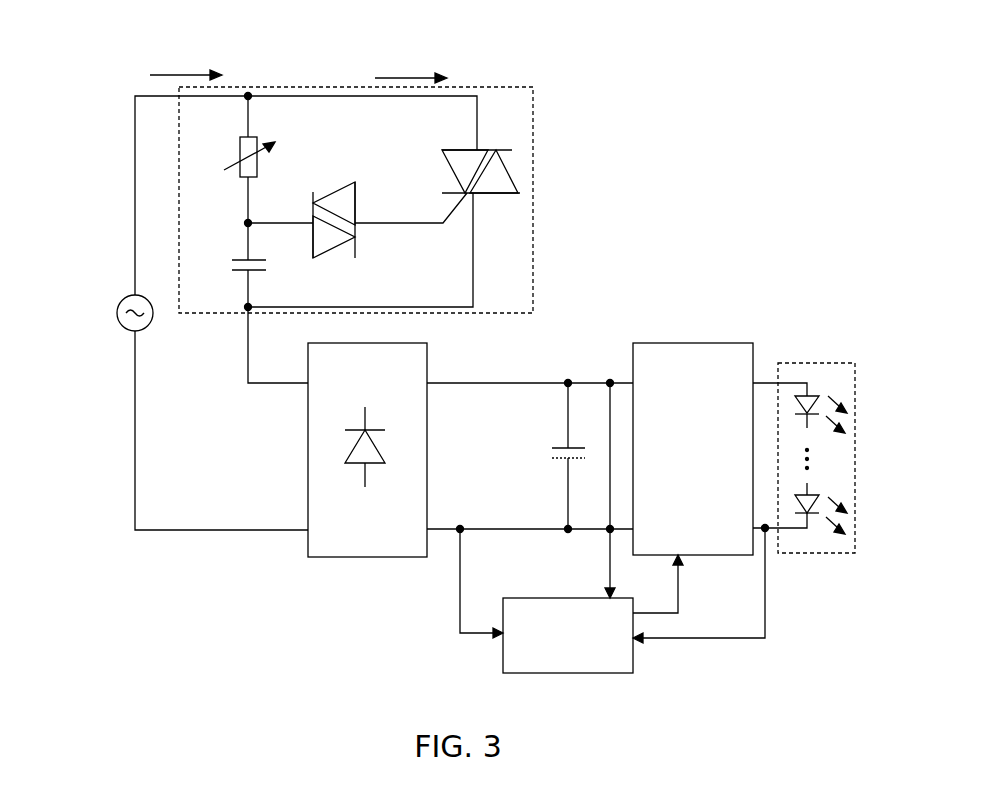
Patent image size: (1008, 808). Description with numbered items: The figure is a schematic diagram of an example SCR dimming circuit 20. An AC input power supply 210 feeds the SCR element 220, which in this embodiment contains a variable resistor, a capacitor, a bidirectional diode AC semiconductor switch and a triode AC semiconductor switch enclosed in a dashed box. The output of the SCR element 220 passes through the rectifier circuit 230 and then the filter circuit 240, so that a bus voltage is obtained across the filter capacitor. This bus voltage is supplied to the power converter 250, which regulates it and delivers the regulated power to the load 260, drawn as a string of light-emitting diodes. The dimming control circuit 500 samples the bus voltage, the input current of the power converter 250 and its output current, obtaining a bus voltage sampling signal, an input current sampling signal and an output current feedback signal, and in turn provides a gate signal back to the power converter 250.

The SCR dimming circuit 20 is at (468, 34).
The AC input power supply 210 is at (116, 313).
The SCR element 220 is at (534, 143).
The rectifier circuit 230 is at (308, 463).
The filter circuit 240 is at (553, 449).
The power converter 250 is at (693, 416).
The load 260 is at (816, 425).
The dimming control circuit 500 is at (634, 667).